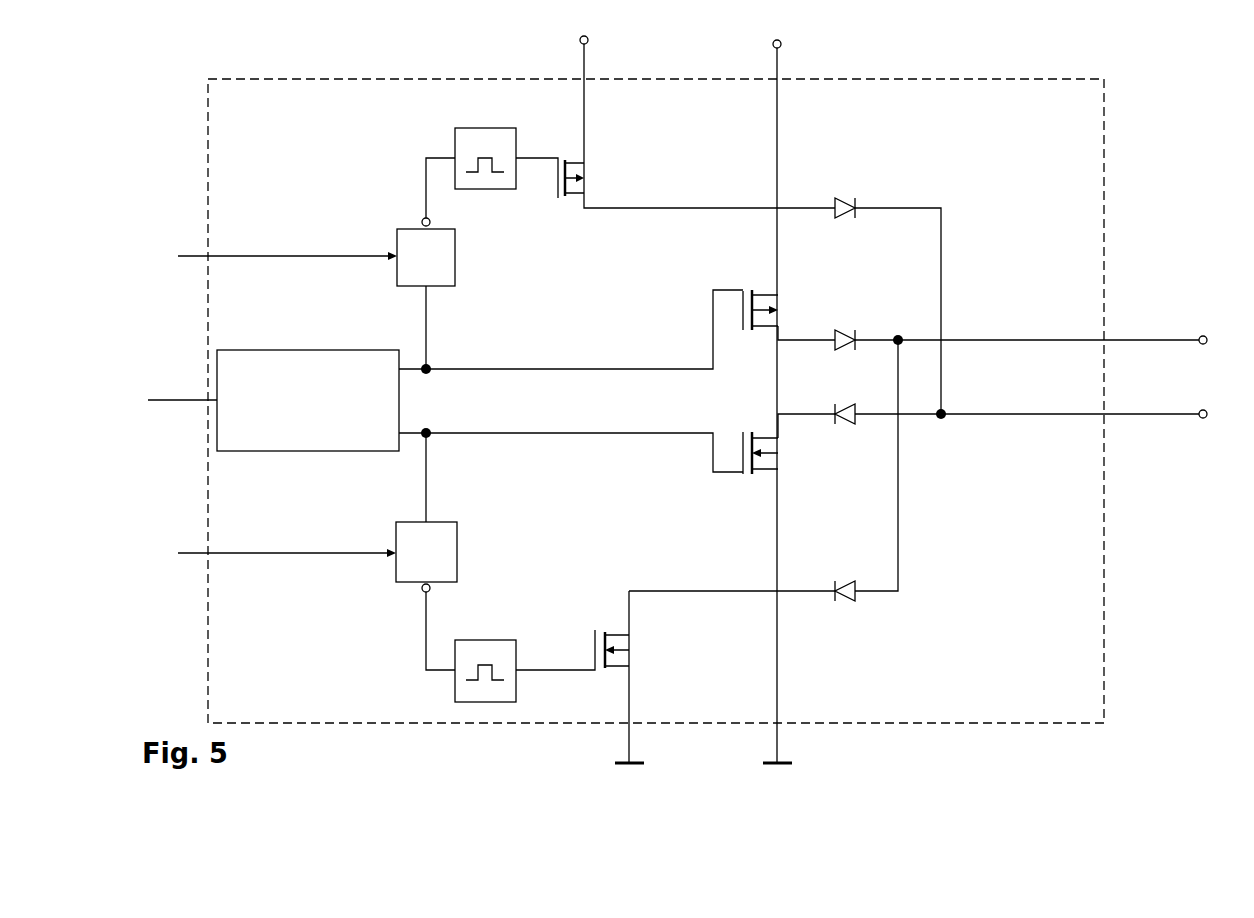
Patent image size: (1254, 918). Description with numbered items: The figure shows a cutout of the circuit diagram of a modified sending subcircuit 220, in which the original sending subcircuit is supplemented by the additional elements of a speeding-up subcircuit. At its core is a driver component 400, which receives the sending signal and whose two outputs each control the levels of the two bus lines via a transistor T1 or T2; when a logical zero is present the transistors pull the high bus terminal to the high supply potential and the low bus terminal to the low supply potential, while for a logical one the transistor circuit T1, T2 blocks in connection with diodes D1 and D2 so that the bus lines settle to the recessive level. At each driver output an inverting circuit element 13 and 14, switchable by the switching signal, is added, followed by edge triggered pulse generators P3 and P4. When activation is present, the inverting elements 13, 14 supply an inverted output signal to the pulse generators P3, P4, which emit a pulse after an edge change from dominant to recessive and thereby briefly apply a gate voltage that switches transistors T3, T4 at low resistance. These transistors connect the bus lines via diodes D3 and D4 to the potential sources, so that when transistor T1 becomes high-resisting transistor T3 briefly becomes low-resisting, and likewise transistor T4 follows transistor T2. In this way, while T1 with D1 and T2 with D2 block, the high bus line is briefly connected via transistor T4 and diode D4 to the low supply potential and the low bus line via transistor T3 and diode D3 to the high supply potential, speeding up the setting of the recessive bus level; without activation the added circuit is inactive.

The modified sending subcircuit 220 is at (672, 410).
The driver component 400 is at (338, 436).
The inverting circuit element 13 is at (484, 300).
The inverting circuit element 14 is at (495, 505).
The transistor T1 is at (773, 295).
The transistor T2 is at (774, 473).
The transistor T3 is at (675, 126).
The transistor T4 is at (580, 677).
The diode D1 is at (1021, 324).
The diode D2 is at (1021, 447).
The diode D3 is at (888, 287).
The diode D4 is at (763, 493).
The pulse generator P3 is at (475, 178).
The pulse generator P4 is at (478, 647).